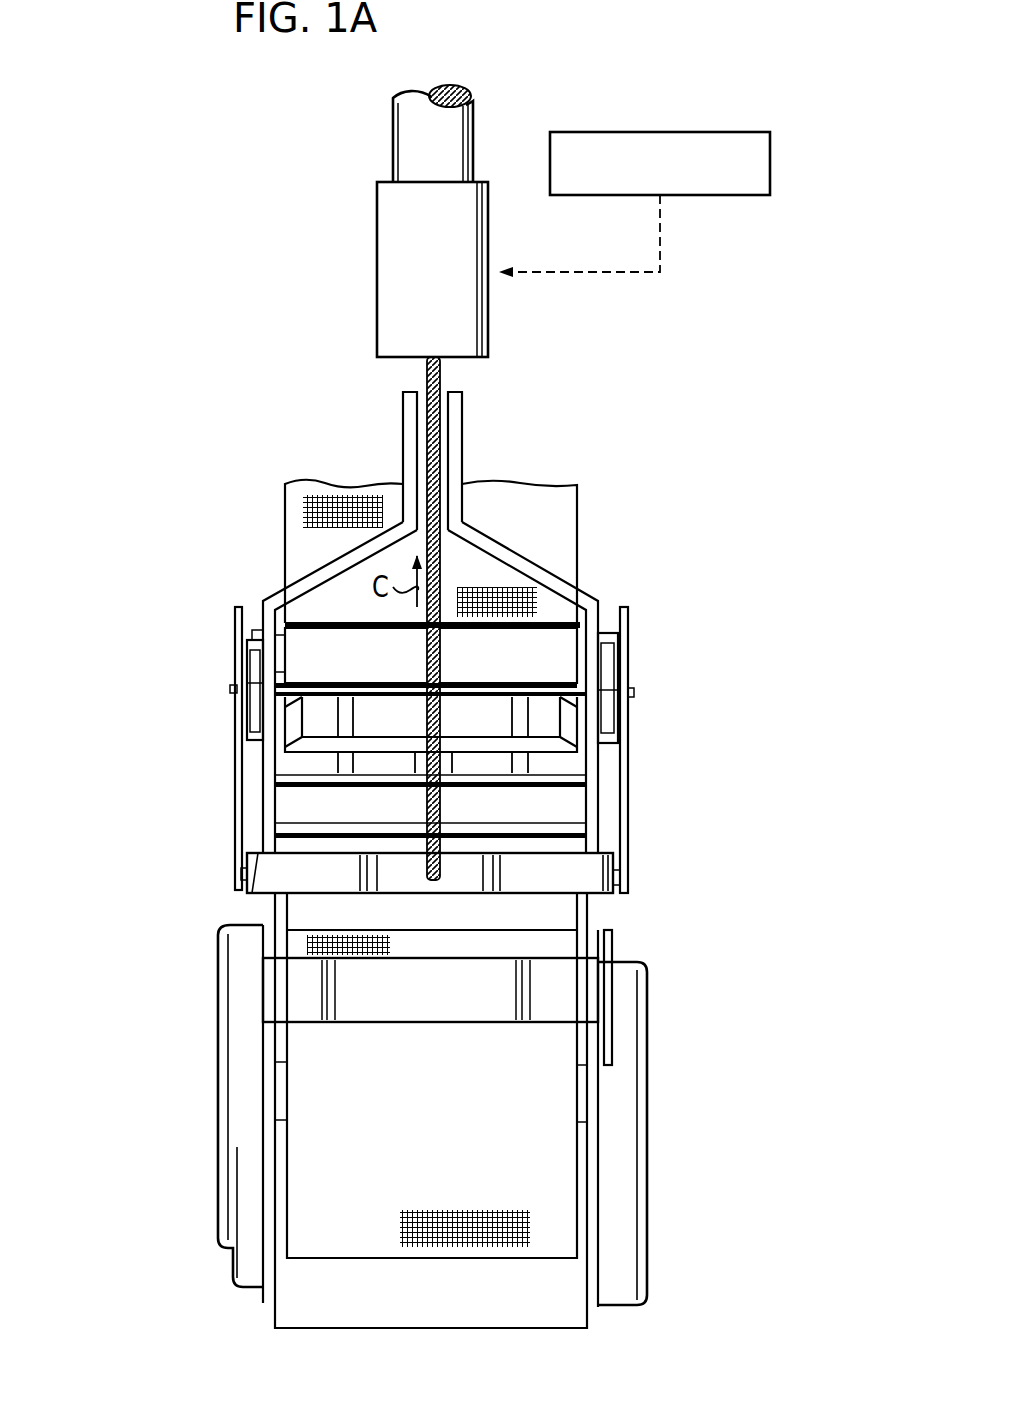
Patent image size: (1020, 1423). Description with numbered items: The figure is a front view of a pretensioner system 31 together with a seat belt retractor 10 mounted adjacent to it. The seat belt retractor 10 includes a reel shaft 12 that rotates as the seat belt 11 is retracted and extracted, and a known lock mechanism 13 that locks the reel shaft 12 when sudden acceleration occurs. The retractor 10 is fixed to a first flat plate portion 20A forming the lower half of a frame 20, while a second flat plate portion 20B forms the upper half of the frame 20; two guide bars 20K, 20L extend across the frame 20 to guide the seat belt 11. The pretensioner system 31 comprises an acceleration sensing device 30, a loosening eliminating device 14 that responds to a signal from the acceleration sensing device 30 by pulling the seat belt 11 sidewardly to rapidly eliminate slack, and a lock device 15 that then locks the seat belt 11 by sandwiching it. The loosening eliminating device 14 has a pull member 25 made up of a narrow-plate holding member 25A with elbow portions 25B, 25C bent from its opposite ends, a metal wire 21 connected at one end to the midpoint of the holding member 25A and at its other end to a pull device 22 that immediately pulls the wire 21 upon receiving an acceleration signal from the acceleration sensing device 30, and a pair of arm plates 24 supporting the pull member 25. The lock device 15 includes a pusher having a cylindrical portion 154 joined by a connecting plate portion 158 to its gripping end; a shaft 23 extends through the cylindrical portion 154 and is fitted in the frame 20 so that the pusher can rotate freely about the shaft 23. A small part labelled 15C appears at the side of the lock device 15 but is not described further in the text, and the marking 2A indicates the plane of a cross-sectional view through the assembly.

The seat belt retractor 10 is at (421, 1110).
The seat belt 11 is at (577, 497).
The reel shaft 12 is at (580, 1100).
The lock mechanism 13 is at (650, 1004).
The loosening eliminating device 14 is at (632, 626).
The lock device 15 is at (318, 645).
The stopper screw 15C is at (231, 690).
The cylindrical portion 154 is at (550, 643).
The connecting plate portion 158 is at (365, 718).
The frame 20 is at (274, 910).
The first flat plate portion 20A is at (597, 613).
The second flat plate portion 20B is at (403, 443).
The guide bar 20K is at (580, 783).
The guide bar 20L is at (580, 830).
The metal wire 21 is at (477, 422).
The pull device 22 is at (402, 305).
The shaft 23 is at (278, 658).
The arm plates 24 is at (233, 633).
The pull member 25 is at (612, 898).
The holding member 25A is at (273, 893).
The elbow portion 25B is at (245, 873).
The elbow portion 25C is at (619, 877).
The acceleration sensing device 30 is at (733, 197).
The pretensioner system 31 is at (405, 523).
The section line 2A is at (447, 80).